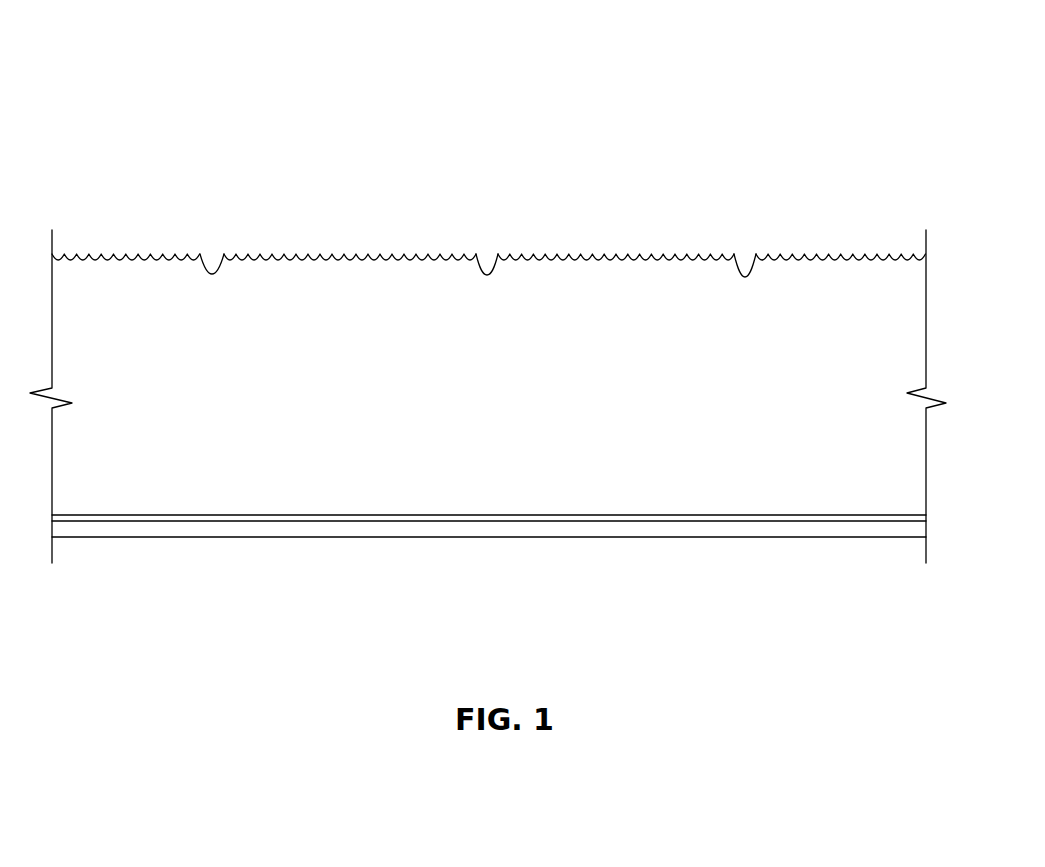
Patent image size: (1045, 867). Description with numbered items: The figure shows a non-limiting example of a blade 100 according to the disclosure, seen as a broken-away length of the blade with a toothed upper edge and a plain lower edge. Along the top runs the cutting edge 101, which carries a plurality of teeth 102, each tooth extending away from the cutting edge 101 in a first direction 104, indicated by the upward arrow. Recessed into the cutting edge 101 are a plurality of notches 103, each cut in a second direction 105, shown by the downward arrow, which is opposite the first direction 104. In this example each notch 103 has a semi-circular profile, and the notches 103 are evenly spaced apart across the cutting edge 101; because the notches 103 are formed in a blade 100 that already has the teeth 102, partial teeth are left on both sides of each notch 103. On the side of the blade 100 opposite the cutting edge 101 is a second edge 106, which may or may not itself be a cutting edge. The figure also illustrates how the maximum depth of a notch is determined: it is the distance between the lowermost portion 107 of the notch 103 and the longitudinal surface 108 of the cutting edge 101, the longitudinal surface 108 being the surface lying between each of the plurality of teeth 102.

The blade 100 is at (525, 146).
The cutting edge 101 is at (441, 258).
The plurality of teeth 102 is at (528, 262).
The notches 103 is at (212, 272).
The first direction 104 is at (682, 40).
The second direction 105 is at (771, 102).
The second edge 106 is at (513, 528).
The lowermost portion 107 is at (487, 273).
The longitudinal surface 108 is at (524, 258).